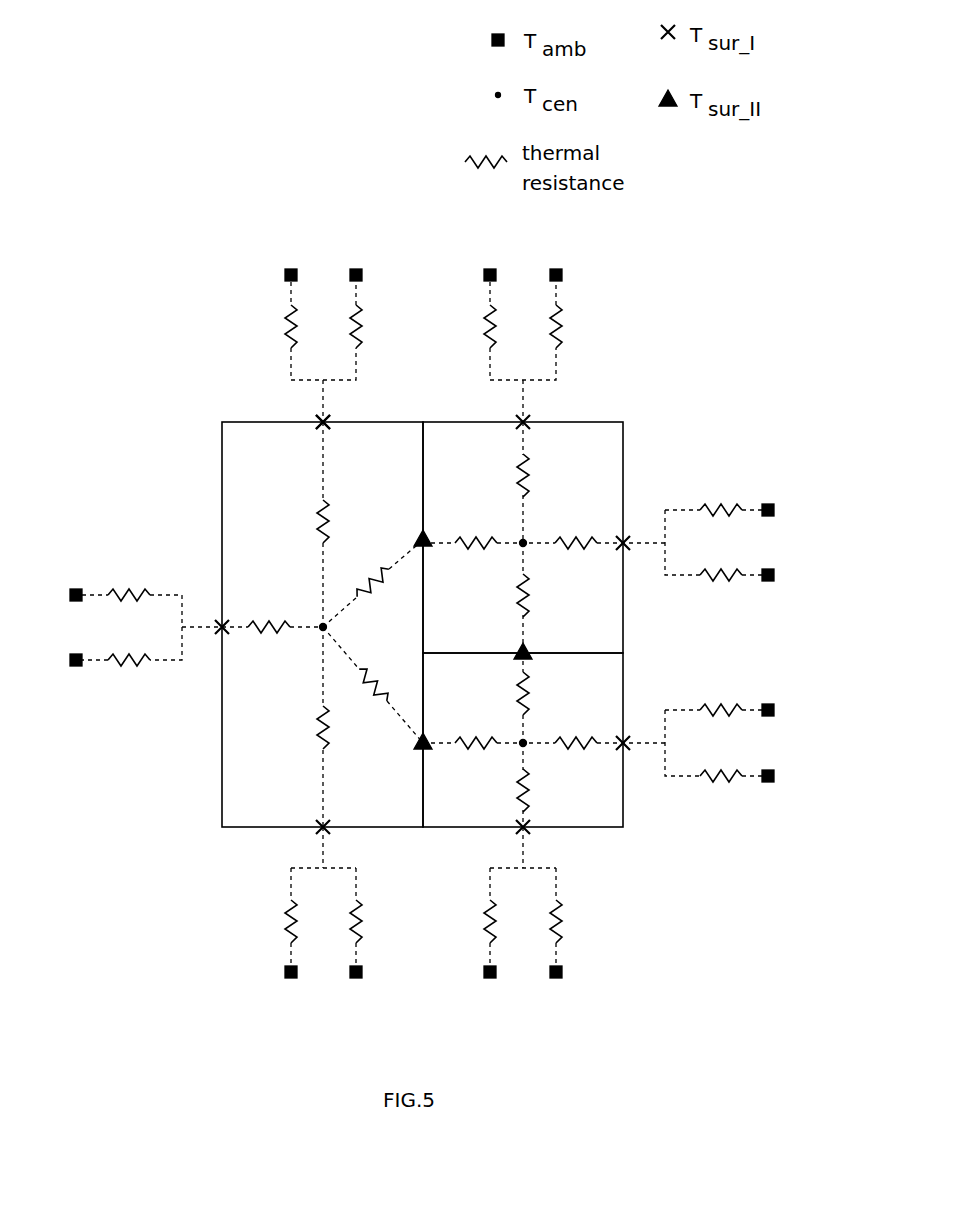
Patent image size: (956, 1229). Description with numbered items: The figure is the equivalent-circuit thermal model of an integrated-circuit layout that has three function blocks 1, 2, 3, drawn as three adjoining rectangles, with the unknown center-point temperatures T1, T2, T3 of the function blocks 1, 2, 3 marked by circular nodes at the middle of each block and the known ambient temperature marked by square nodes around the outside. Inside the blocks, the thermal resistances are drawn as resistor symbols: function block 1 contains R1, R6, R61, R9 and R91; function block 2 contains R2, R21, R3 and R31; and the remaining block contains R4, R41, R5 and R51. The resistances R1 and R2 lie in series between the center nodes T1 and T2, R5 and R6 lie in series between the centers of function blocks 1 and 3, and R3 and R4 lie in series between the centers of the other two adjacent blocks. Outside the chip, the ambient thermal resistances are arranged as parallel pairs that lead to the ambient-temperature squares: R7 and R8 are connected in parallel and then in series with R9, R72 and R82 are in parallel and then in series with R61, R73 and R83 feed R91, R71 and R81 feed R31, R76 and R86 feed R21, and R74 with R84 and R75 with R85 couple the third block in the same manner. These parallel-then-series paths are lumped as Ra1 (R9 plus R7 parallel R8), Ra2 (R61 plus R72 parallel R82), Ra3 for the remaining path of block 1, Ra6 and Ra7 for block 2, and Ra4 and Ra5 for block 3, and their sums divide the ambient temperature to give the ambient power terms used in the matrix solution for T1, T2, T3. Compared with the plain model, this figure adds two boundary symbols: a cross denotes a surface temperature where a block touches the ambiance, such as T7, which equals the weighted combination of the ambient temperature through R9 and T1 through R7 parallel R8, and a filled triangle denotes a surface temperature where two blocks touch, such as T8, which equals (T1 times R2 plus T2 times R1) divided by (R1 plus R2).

The function block 1 is at (322, 624).
The function block 2 is at (523, 537).
The function block 3 is at (523, 740).
The temperature of the center point of function block 1 T1 is at (319, 621).
The temperature of the center point of function block 2 T2 is at (528, 540).
The temperature of the center point of function block 3 T3 is at (528, 748).
The surface temperature contacting the ambiance T7 is at (319, 427).
The surface temperature contacting the adjacent function block T8 is at (418, 534).
The thermal resistance R1 is at (370, 576).
The thermal resistance R2 is at (476, 528).
The thermal resistance R21 is at (577, 528).
The thermal resistance R3 is at (506, 595).
The thermal resistance R31 is at (501, 475).
The thermal resistance R4 is at (541, 693).
The thermal resistance R41 is at (500, 790).
The thermal resistance R5 is at (476, 728).
The thermal resistance R51 is at (578, 728).
The thermal resistance R6 is at (379, 678).
The thermal resistance R61 is at (268, 644).
The thermal resistance R9 is at (306, 521).
The thermal resistance R91 is at (302, 727).
The ambient thermal resistance R7 is at (273, 326).
The ambient thermal resistance R8 is at (373, 326).
The ambient thermal resistance R71 is at (468, 326).
The ambient thermal resistance R81 is at (578, 326).
The ambient thermal resistance R72 is at (128, 582).
The ambient thermal resistance R82 is at (128, 647).
The ambient thermal resistance R73 is at (266, 921).
The ambient thermal resistance R83 is at (379, 921).
The ambient thermal resistance R74 is at (468, 921).
The ambient thermal resistance R84 is at (577, 921).
The ambient thermal resistance R75 is at (721, 697).
The ambient thermal resistance R85 is at (721, 791).
The ambient thermal resistance R76 is at (721, 498).
The ambient thermal resistance R86 is at (721, 592).
The ambient thermal resistance combination Ra1 is at (243, 354).
The ambient thermal resistance combination Ra2 is at (172, 557).
The ambient thermal resistance combination Ra3 is at (258, 878).
The ambient thermal resistance combination Ra4 is at (596, 880).
The ambient thermal resistance combination Ra5 is at (690, 798).
The ambient thermal resistance combination Ra6 is at (687, 492).
The ambient thermal resistance combination Ra7 is at (600, 358).